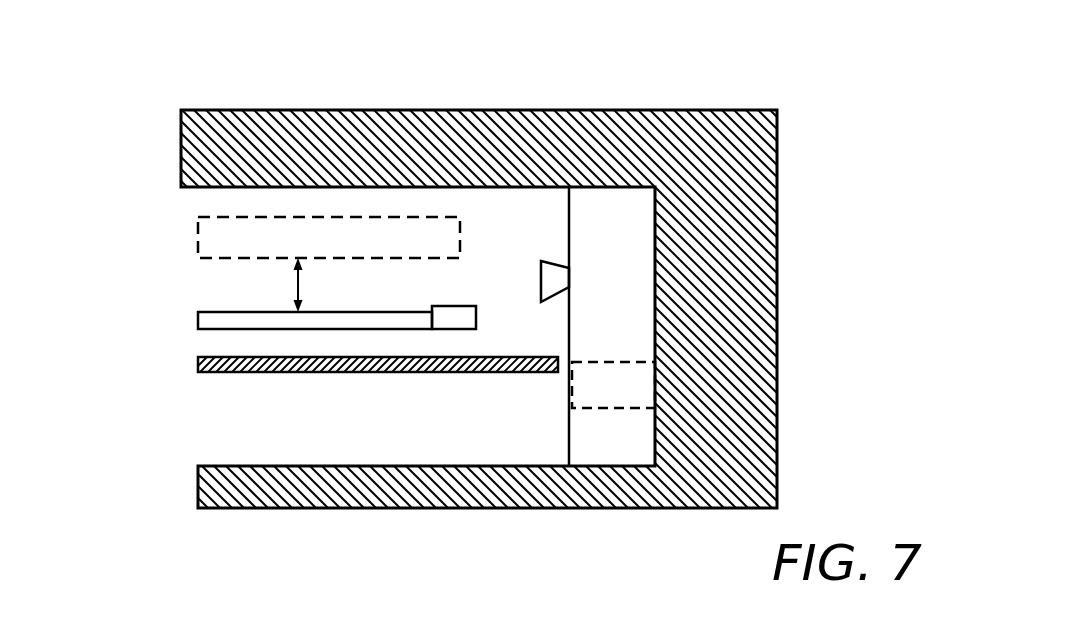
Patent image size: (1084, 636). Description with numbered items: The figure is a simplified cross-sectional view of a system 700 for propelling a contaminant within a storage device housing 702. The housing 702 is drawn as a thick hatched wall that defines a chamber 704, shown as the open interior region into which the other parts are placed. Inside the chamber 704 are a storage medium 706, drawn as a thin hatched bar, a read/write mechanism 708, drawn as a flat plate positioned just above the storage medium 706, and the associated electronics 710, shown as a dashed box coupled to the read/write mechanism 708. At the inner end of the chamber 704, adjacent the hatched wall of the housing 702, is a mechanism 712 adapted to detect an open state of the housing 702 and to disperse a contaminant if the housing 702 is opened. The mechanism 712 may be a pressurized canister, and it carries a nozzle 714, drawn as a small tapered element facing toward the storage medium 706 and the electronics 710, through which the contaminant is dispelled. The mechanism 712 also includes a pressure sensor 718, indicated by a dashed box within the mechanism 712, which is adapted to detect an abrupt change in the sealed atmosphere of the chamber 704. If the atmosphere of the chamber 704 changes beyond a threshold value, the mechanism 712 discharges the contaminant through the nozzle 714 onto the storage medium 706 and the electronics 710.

The system 700 is at (499, 256).
The storage device housing 702 is at (777, 320).
The chamber 704 is at (327, 342).
The storage medium 706 is at (308, 373).
The read/write mechanism 708 is at (304, 301).
The electronics 710 is at (198, 243).
The mechanism 712 is at (590, 336).
The nozzle 714 is at (548, 262).
The pressure sensor 718 is at (592, 400).